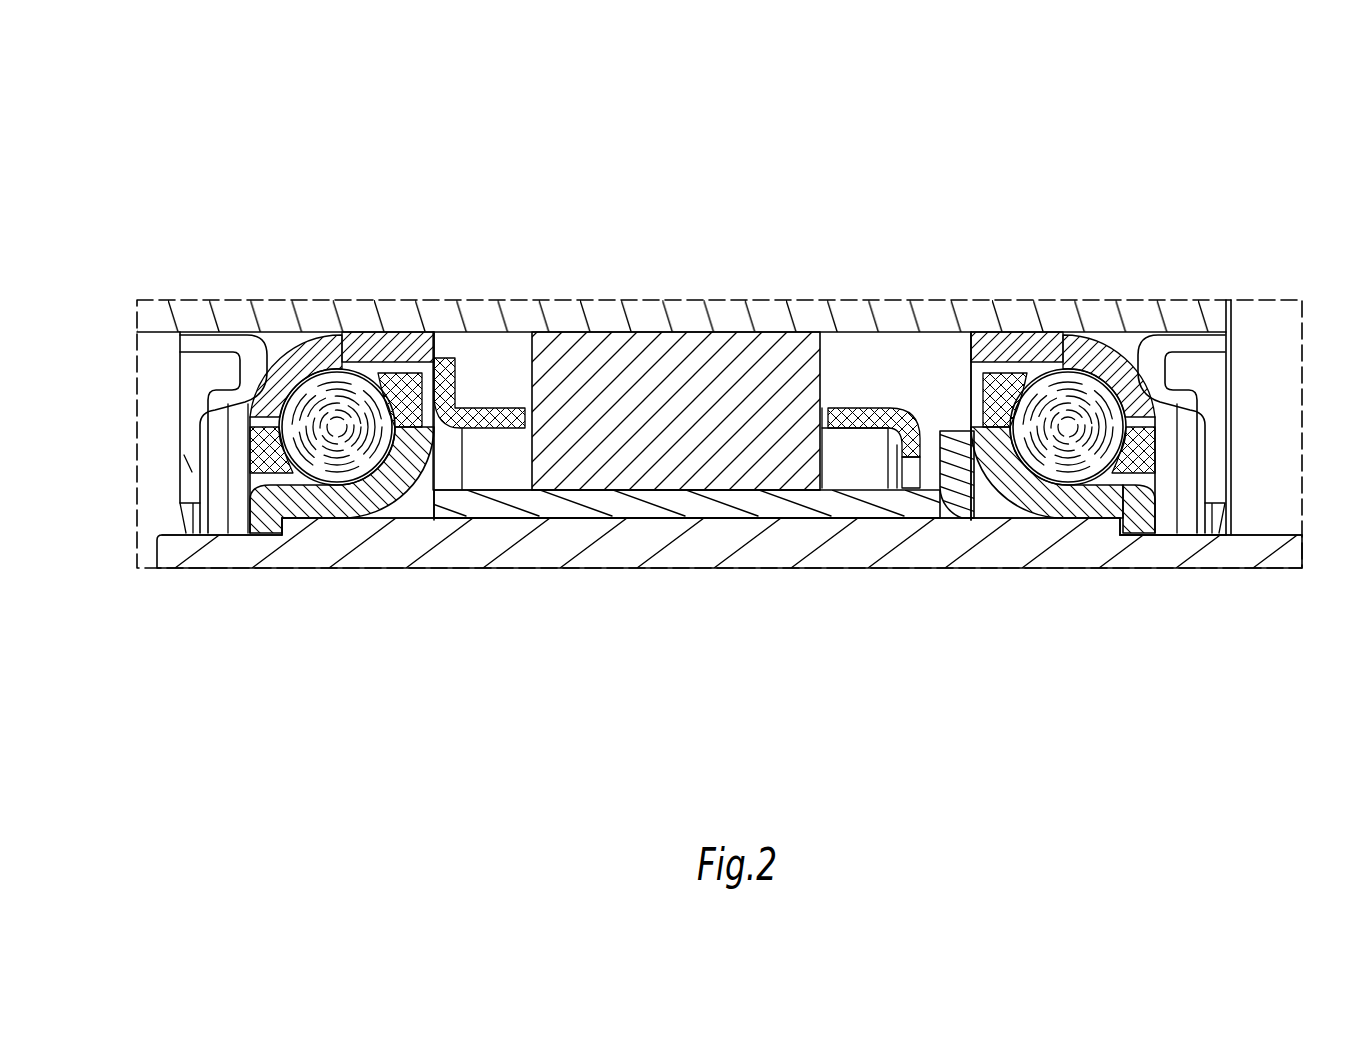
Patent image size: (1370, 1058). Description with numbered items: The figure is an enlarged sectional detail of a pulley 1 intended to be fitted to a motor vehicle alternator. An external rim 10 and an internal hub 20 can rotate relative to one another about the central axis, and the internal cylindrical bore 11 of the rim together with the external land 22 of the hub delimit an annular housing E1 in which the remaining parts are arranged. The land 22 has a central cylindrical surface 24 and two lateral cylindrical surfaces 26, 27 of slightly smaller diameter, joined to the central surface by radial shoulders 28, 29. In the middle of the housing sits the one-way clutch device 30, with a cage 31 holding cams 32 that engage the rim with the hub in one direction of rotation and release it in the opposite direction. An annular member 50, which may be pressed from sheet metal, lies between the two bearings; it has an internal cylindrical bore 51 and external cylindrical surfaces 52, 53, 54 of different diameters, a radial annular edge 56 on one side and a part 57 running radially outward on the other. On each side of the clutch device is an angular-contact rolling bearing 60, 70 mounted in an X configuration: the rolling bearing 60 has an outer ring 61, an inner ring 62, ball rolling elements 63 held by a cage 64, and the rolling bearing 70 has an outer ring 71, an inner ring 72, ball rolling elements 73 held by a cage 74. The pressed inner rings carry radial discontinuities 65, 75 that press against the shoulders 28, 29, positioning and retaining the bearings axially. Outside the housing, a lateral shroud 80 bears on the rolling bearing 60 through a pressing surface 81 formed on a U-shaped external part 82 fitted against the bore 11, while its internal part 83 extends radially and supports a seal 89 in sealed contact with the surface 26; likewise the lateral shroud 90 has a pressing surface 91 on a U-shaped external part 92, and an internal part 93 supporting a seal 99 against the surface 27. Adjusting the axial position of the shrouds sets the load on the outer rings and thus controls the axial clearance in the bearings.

The pulley 1 is at (157, 171).
The external rim 10 is at (601, 342).
The internal cylindrical bore 11 is at (613, 368).
The internal hub 20 is at (556, 548).
The external land 22 is at (1248, 526).
The central cylindrical surface 24 is at (695, 490).
The lateral cylindrical surface 26 is at (235, 497).
The lateral cylindrical surface 27 is at (1168, 531).
The shoulder 28 is at (278, 541).
The shoulder 29 is at (1130, 540).
The one-way clutch device 30 is at (842, 362).
The cage 31 is at (858, 410).
The cams 32 is at (716, 306).
The member 50 is at (630, 500).
The internal cylindrical bore 51 is at (838, 520).
The external cylindrical surface 52 is at (745, 474).
The external cylindrical surface 53 is at (500, 486).
The external cylindrical surface 54 is at (870, 450).
The edge 56 is at (420, 520).
The part 57 is at (952, 452).
The rolling bearing 60 is at (350, 386).
The outer ring 61 is at (318, 334).
The inner ring 62 is at (338, 520).
The rolling elements 63 is at (345, 334).
The cage 64 is at (392, 378).
The radial discontinuity 65 is at (240, 531).
The rolling bearing 70 is at (1084, 384).
The outer ring 71 is at (1102, 388).
The inner ring 72 is at (1010, 488).
The rolling elements 73 is at (1050, 331).
The cage 74 is at (988, 378).
The radial discontinuity 75 is at (1045, 520).
The lateral shroud 80 is at (161, 393).
The pressing surface 81 is at (272, 385).
The U-shaped external part 82 is at (205, 373).
The internal part 83 is at (195, 466).
The seal 89 is at (180, 522).
The lateral shroud 90 is at (1242, 403).
The pressing surface 91 is at (1130, 388).
The U-shaped external part 92 is at (1205, 374).
The internal part 93 is at (1217, 462).
The seal 99 is at (1220, 522).
The housing E1 is at (488, 380).